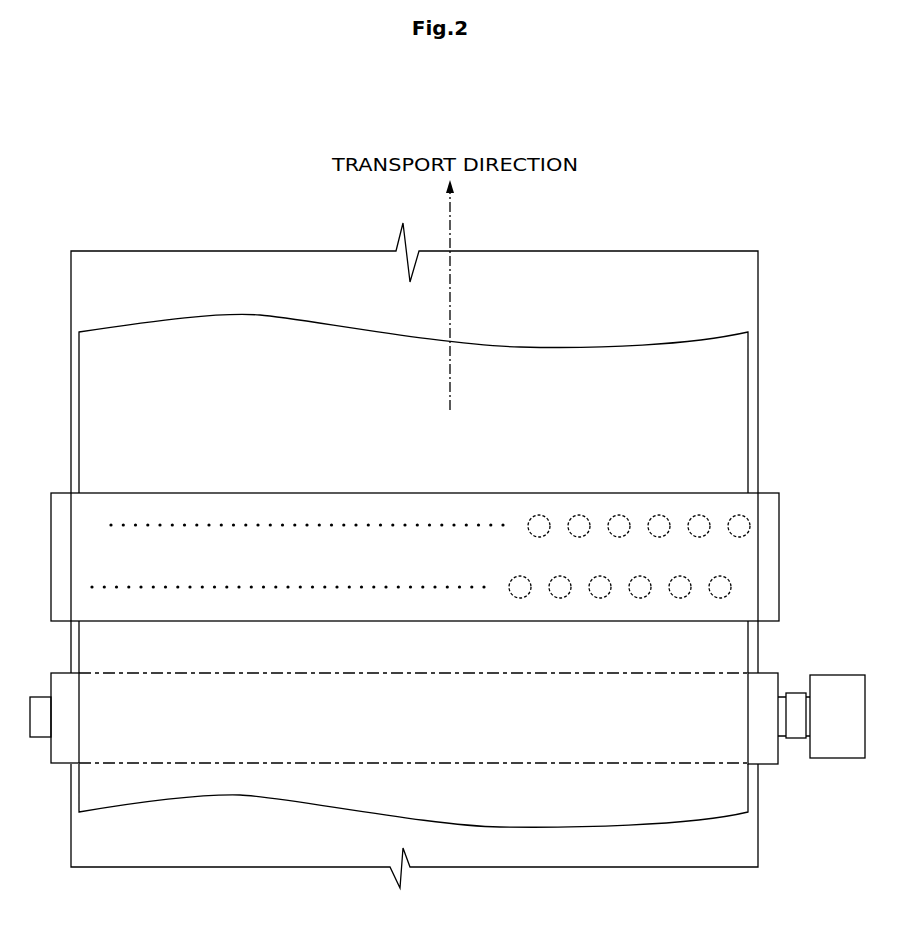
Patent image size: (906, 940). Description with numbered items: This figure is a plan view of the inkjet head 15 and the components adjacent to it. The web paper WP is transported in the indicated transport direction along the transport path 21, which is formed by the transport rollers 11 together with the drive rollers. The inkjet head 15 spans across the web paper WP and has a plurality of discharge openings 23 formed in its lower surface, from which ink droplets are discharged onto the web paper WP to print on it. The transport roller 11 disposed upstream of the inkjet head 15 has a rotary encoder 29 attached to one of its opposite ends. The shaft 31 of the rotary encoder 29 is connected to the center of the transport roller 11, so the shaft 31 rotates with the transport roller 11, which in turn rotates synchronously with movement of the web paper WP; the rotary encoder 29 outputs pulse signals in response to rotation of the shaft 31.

The transport path 21 is at (761, 310).
The web paper WP is at (507, 348).
The transport roller 11 is at (545, 770).
The inkjet head 15 is at (770, 550).
The discharge openings 23 is at (620, 514).
The shaft 31 is at (800, 693).
The rotary encoder 29 is at (824, 770).